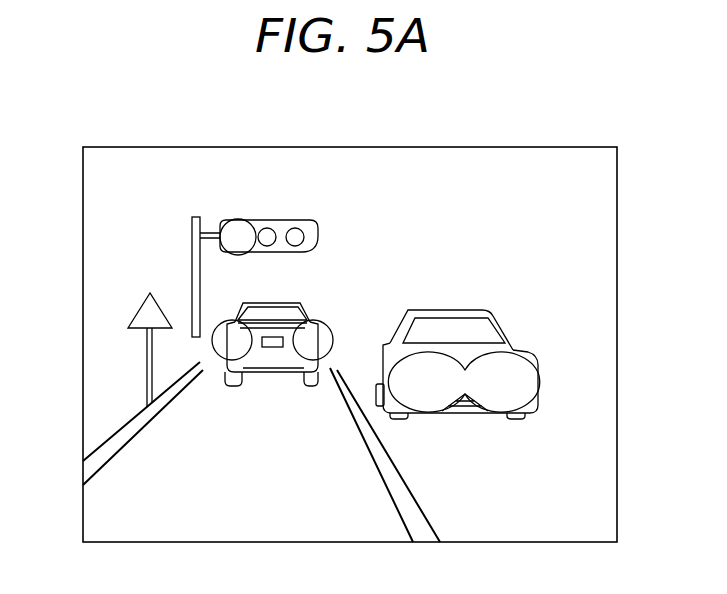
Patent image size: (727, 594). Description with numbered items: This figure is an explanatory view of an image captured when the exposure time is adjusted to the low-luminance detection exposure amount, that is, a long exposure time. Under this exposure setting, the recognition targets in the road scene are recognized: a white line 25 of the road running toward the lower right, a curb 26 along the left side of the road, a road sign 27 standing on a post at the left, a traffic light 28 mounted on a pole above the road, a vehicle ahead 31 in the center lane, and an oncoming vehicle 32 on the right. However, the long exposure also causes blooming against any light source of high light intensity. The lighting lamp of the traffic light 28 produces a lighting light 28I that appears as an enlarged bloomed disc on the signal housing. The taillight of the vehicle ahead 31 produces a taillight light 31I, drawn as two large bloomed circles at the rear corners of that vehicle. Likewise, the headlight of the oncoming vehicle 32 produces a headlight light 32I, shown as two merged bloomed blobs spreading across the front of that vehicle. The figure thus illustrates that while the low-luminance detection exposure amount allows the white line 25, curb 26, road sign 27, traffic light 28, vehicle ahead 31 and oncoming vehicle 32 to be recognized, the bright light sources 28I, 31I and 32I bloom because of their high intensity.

The white line 25 is at (420, 500).
The curb 26 is at (124, 428).
The road sign 27 is at (140, 310).
The traffic light 28 is at (255, 214).
The lighting light 28I is at (241, 218).
The vehicle ahead 31 is at (270, 356).
The taillight light 31I is at (219, 358).
The oncoming vehicle 32 is at (466, 323).
The headlight light 32I is at (538, 355).